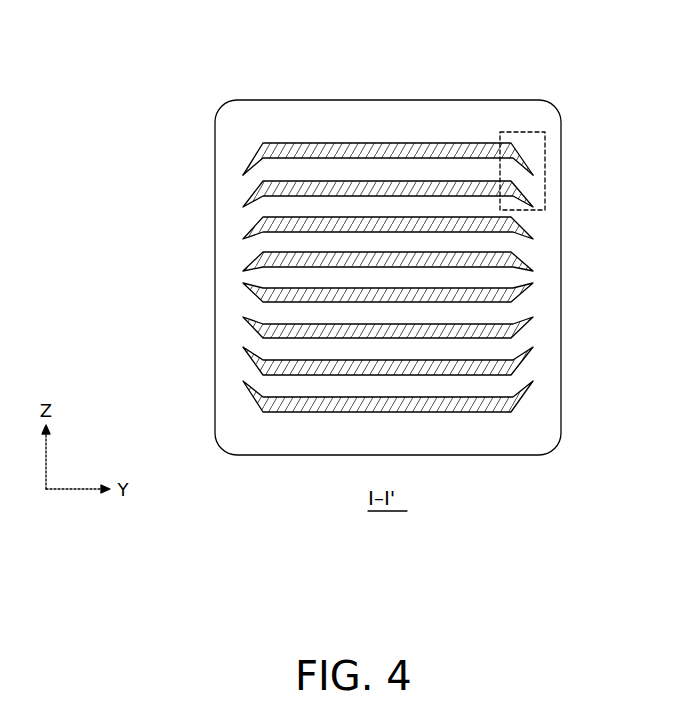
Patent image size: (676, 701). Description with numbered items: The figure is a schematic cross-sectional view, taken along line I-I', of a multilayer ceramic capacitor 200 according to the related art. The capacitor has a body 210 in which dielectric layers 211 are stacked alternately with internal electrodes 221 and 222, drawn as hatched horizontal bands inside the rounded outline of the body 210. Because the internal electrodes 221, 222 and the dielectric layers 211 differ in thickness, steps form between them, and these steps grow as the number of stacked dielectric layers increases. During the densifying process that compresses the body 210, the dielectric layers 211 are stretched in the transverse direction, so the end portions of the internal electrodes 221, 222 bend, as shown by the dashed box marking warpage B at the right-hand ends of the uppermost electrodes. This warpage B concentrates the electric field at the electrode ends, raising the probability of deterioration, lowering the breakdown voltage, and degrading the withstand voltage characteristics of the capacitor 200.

The multilayer ceramic capacitor 200 is at (292, 28).
The body 210 is at (406, 78).
The dielectric layers 211 is at (252, 176).
The internal electrode 221 is at (247, 171).
The internal electrode 222 is at (254, 199).
The warpage B is at (517, 132).